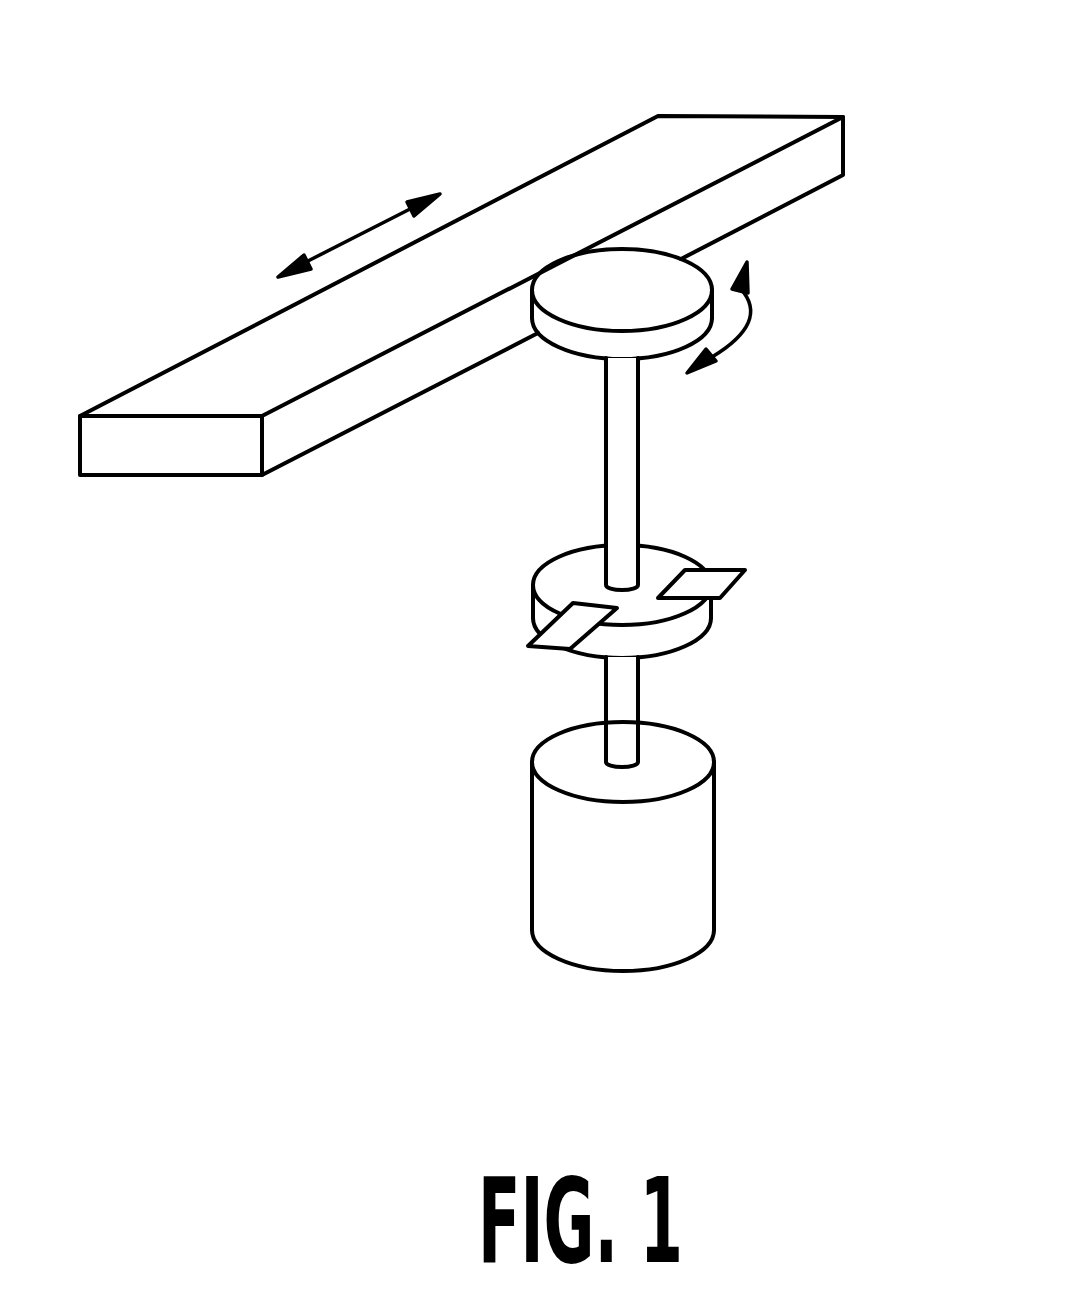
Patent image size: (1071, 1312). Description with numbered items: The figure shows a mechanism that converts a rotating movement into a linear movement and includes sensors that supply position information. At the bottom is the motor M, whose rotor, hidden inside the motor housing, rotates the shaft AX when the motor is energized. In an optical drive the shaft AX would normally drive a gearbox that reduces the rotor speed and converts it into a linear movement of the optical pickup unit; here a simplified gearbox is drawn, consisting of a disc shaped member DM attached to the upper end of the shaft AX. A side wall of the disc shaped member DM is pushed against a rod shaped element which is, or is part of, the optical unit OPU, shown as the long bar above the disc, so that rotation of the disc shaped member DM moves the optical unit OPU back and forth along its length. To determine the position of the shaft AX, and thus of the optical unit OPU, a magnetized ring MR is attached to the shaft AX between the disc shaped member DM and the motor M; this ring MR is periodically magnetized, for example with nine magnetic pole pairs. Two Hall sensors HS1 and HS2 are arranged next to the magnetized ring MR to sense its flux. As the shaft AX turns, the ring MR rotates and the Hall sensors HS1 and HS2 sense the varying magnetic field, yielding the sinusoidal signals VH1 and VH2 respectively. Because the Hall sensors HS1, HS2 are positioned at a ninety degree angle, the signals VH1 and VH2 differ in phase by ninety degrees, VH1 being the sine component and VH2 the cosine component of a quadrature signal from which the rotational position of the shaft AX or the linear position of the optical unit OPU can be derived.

The optical pickup unit OPU is at (753, 117).
The disc shaped member DM is at (562, 356).
The shaft AX is at (640, 452).
The magnetized ring MR is at (690, 643).
The Hall sensor HS1 is at (733, 570).
The Hall sensor HS2 is at (540, 628).
The sinusoidal signal VH1 is at (745, 582).
The sinusoidal signal VH2 is at (560, 642).
The motor M is at (715, 863).